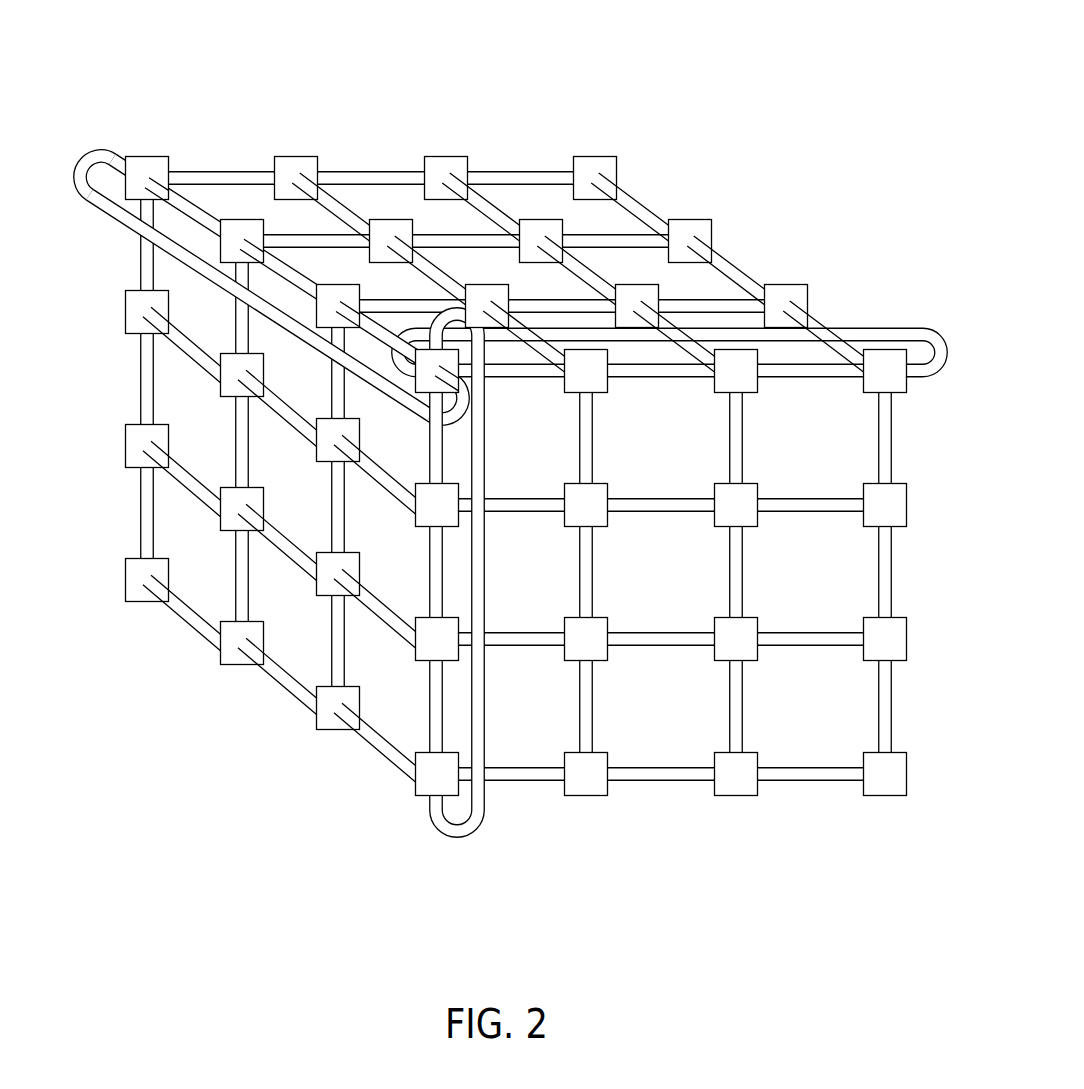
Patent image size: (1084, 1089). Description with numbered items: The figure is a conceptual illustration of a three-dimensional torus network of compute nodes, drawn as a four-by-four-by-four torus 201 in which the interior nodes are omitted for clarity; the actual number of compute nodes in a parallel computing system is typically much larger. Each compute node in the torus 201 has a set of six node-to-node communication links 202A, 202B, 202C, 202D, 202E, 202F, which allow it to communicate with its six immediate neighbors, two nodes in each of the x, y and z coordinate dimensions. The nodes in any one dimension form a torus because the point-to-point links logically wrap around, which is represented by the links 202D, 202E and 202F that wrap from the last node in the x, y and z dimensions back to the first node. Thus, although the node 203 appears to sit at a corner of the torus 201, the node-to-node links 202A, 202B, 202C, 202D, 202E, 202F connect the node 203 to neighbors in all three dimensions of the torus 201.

The torus 201 is at (510, 449).
The node-to-node communication link 202A is at (506, 378).
The node-to-node communication link 202B is at (443, 460).
The node-to-node communication link 202C is at (397, 334).
The node-to-node communication link 202D is at (651, 318).
The node-to-node communication link 202E is at (499, 601).
The node-to-node communication link 202F is at (271, 253).
The node 203 is at (392, 398).